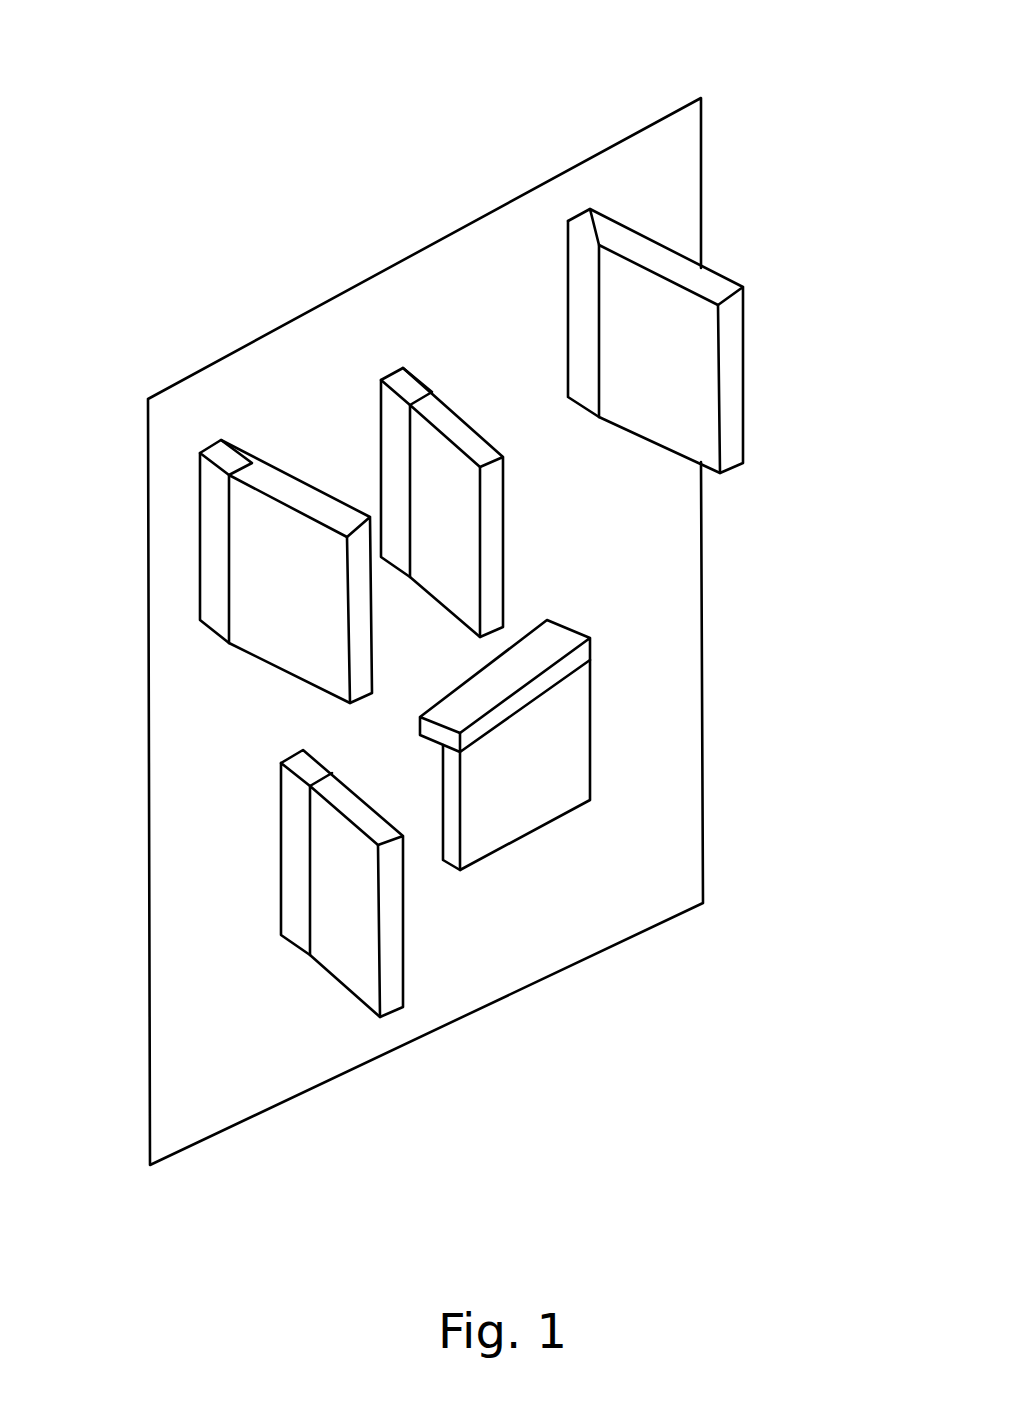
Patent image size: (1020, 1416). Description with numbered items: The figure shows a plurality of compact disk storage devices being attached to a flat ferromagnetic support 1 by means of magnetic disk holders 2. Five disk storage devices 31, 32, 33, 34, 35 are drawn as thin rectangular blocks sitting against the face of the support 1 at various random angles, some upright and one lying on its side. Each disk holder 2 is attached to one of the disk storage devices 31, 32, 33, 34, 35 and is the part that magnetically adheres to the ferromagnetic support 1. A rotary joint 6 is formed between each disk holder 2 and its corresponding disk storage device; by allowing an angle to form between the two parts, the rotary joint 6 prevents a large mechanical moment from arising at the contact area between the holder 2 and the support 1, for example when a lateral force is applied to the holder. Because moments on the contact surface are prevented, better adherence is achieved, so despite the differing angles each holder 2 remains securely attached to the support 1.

The ferromagnetic support 1 is at (678, 144).
The magnetic disk holder 2 is at (393, 380).
The rotary joint 6 is at (614, 236).
The disk storage device 31 is at (707, 347).
The disk storage device 32 is at (457, 528).
The disk storage device 33 is at (265, 562).
The disk storage device 34 is at (348, 975).
The disk storage device 35 is at (540, 808).